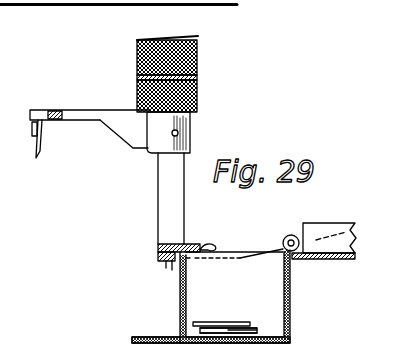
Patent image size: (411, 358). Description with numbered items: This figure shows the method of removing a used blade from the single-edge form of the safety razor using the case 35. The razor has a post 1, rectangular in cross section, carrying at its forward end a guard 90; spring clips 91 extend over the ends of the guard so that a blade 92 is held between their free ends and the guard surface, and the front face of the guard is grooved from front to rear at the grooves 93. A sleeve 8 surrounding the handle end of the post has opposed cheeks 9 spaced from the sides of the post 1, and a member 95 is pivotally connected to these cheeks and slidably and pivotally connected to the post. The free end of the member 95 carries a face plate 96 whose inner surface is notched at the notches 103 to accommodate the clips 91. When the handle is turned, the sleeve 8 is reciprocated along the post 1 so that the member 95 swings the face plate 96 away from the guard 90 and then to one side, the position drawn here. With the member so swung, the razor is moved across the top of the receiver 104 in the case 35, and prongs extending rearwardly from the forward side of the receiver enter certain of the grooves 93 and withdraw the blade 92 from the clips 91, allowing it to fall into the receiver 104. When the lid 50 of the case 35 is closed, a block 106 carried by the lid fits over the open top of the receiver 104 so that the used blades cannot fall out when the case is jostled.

The post 1 is at (170, 201).
The sleeve 8 is at (199, 50).
The cheeks 9 is at (191, 128).
The case 35 is at (291, 312).
The lid 50 is at (322, 260).
The guard 90 is at (212, 245).
The spring clips 91 is at (170, 264).
The blade 92 is at (228, 330).
The grooves 93 is at (160, 257).
The member 95 is at (134, 143).
The face plate 96 is at (40, 140).
The notches 103 is at (37, 122).
The receiver 104 is at (0, 342).
The block 106 is at (322, 225).